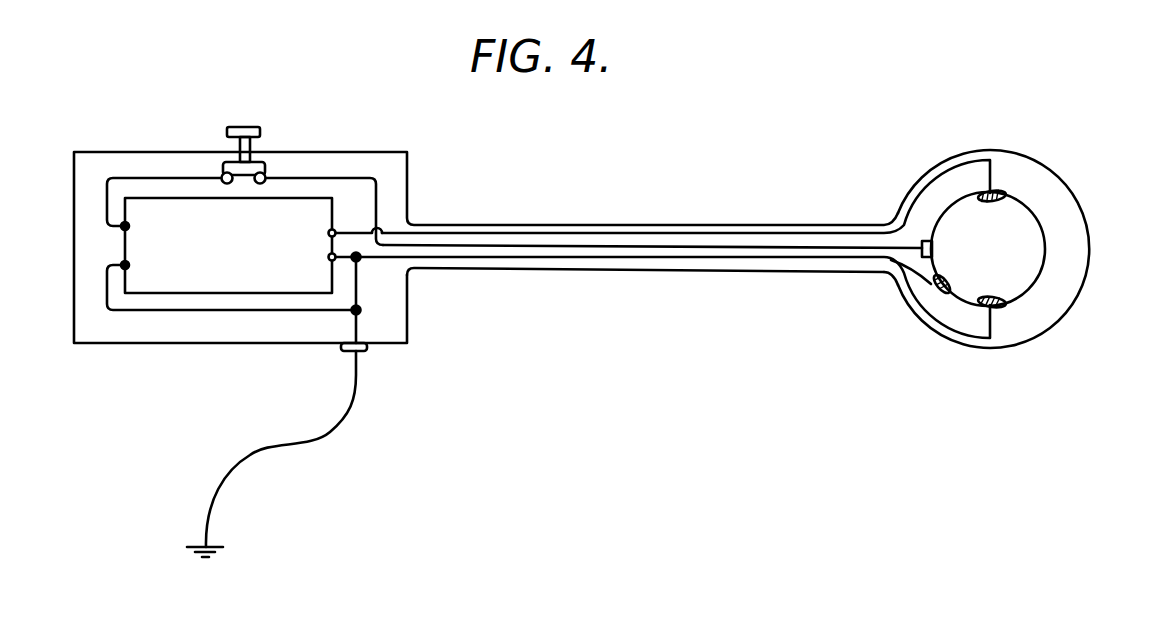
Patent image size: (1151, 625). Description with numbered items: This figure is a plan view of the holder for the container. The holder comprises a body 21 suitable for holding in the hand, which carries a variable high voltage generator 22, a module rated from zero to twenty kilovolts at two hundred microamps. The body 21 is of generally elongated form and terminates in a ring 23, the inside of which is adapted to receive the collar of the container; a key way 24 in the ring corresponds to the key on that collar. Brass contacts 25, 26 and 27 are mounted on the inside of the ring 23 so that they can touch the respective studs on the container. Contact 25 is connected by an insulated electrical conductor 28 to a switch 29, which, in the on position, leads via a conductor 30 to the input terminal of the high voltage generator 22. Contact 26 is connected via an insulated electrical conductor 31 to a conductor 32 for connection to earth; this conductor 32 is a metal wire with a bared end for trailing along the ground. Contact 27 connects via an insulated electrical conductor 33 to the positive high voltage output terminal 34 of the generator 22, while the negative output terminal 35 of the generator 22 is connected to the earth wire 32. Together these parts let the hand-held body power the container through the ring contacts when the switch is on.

The body 21 is at (407, 175).
The variable high voltage generator 22 is at (143, 243).
The ring 23 is at (1087, 224).
The key way 24 is at (932, 248).
The brass contact 25 is at (951, 280).
The brass contact 26 is at (1019, 295).
The brass contact 27 is at (1012, 199).
The insulated electrical conductor 28 is at (637, 246).
The switch 29 is at (261, 133).
The conductor 30 is at (107, 191).
The insulated electrical conductor 31 is at (703, 256).
The earth conductor 32 is at (312, 440).
The insulated electrical conductor 33 is at (584, 232).
The positive high voltage output terminal 34 is at (329, 232).
The negative output terminal 35 is at (329, 258).